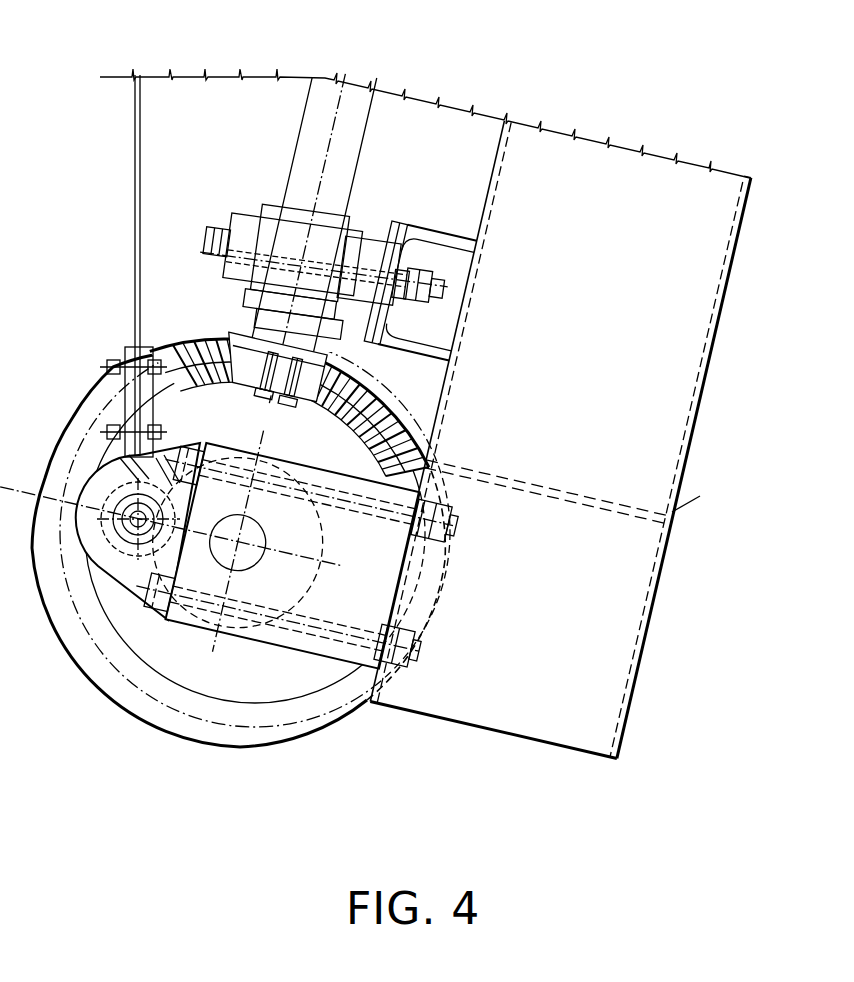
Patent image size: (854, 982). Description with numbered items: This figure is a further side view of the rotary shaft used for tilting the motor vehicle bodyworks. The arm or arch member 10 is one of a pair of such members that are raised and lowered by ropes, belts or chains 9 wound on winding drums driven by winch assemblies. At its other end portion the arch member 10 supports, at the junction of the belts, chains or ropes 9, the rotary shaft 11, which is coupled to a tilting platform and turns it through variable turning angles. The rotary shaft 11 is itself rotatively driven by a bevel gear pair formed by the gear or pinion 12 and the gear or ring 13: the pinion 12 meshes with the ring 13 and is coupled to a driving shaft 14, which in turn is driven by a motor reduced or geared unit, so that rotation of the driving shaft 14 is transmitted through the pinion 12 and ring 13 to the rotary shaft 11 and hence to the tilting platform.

The ropes, belts or chains 9 is at (138, 160).
The arm or arch member 10 is at (668, 438).
The rotary shaft 11 is at (192, 766).
The gear or pinion 12 is at (322, 371).
The gear or ring 13 is at (190, 344).
The driving shaft 14 is at (353, 104).